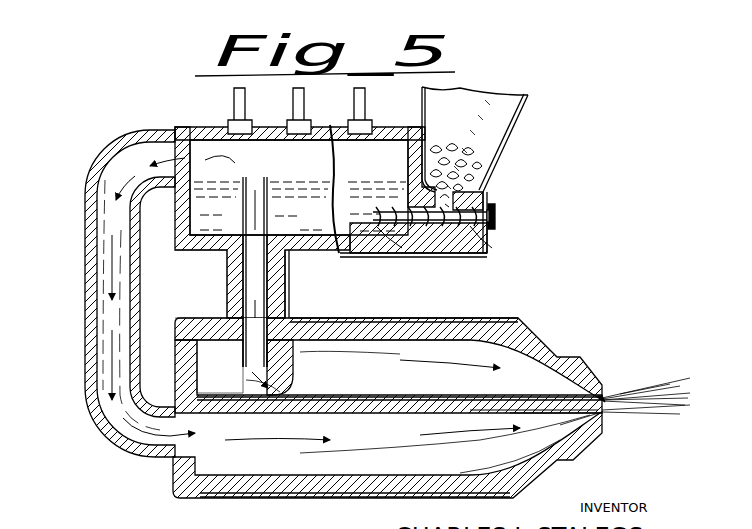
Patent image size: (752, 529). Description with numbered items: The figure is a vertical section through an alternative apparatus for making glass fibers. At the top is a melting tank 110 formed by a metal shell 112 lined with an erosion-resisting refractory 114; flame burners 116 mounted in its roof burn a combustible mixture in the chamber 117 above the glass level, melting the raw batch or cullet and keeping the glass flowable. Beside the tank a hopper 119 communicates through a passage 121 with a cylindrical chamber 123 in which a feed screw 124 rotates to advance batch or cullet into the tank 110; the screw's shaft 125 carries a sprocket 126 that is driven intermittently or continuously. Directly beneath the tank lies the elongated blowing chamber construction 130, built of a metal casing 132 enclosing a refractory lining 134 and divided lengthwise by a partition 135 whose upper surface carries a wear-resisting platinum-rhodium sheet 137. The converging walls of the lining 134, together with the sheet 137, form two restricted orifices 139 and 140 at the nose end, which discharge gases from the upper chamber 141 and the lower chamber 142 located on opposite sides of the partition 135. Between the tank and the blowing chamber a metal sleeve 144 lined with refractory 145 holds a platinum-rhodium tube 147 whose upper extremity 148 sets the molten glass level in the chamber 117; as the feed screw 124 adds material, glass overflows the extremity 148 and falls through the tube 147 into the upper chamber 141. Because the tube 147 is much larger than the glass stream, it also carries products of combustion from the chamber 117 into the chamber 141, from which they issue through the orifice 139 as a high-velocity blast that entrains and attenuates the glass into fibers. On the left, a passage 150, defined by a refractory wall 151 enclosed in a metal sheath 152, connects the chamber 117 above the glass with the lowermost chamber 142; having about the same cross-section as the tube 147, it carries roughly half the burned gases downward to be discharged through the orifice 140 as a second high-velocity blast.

The melting tank 110 is at (432, 258).
The metal shell 112 is at (341, 252).
The refractory 114 is at (215, 238).
The flame burners 116 is at (238, 120).
The chamber 117 is at (300, 192).
The hopper 119 is at (500, 137).
The passage 121 is at (470, 203).
The cylindrical chamber 123 is at (478, 254).
The feed screw 124 is at (397, 240).
The shaft 125 is at (491, 226).
The sprocket 126 is at (495, 214).
The blowing chamber construction 130 is at (467, 318).
The metal casing 132 is at (405, 317).
The refractory lining 134 is at (365, 340).
The partition 135 is at (353, 410).
The metallic sheet 137 is at (510, 407).
The orifice 139 is at (606, 396).
The orifice 140 is at (601, 415).
The upper chamber 141 is at (400, 366).
The lowermost chamber 142 is at (407, 444).
The metal casing or sleeve 144 is at (289, 296).
The refractory 145 is at (228, 298).
The tube 147 is at (246, 360).
The upper extremity 148 is at (272, 182).
The passage 150 is at (105, 345).
The refractory wall 151 is at (96, 306).
The metal casing or sheath 152 is at (84, 232).